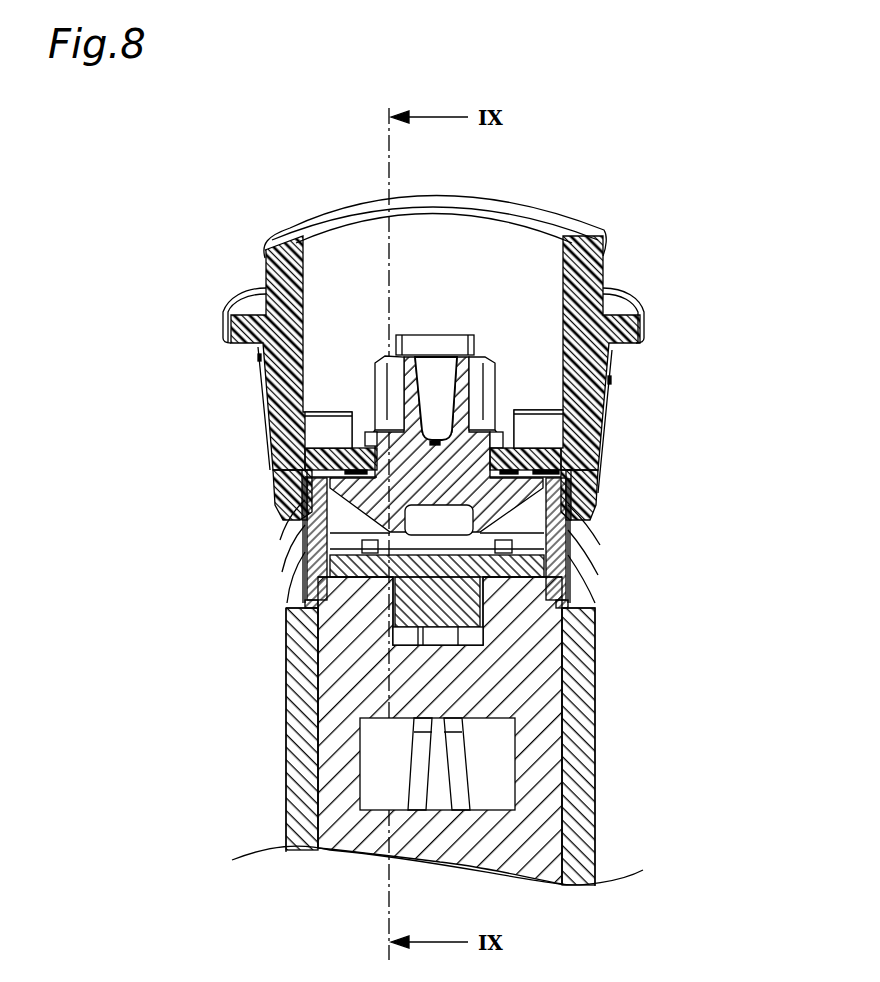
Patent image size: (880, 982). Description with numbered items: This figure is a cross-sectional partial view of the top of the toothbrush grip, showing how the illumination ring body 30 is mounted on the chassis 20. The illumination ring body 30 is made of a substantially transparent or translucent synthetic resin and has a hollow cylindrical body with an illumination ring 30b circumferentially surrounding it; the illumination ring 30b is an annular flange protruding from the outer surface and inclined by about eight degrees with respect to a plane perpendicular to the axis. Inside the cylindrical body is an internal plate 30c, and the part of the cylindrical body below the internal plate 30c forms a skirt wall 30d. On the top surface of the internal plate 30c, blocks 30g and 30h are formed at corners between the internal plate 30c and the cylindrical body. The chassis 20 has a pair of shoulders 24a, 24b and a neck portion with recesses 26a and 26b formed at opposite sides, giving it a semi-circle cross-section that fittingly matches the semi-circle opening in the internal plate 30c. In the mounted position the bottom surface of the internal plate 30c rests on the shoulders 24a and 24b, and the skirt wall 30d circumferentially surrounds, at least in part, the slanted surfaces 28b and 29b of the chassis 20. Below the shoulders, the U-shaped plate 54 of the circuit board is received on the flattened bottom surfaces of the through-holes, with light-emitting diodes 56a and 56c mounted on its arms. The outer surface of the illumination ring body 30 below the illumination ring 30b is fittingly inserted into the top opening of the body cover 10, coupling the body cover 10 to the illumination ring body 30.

The body cover 10 is at (300, 760).
The chassis 20 is at (335, 680).
The shoulder 24a is at (303, 483).
The shoulder 24b is at (545, 478).
The recess 26a is at (372, 437).
The recess 26b is at (494, 435).
The slanted surface 28b is at (313, 510).
The slanted surface 29b is at (558, 510).
The illumination ring body 30 is at (582, 262).
The illumination ring 30b is at (626, 330).
The internal plate 30c is at (563, 460).
The skirt wall 30d is at (598, 505).
The block 30g is at (322, 440).
The block 30h is at (553, 425).
The U-shaped plate 54 is at (318, 578).
The light-emitting diode 56a is at (303, 525).
The light-emitting diode 56c is at (568, 530).